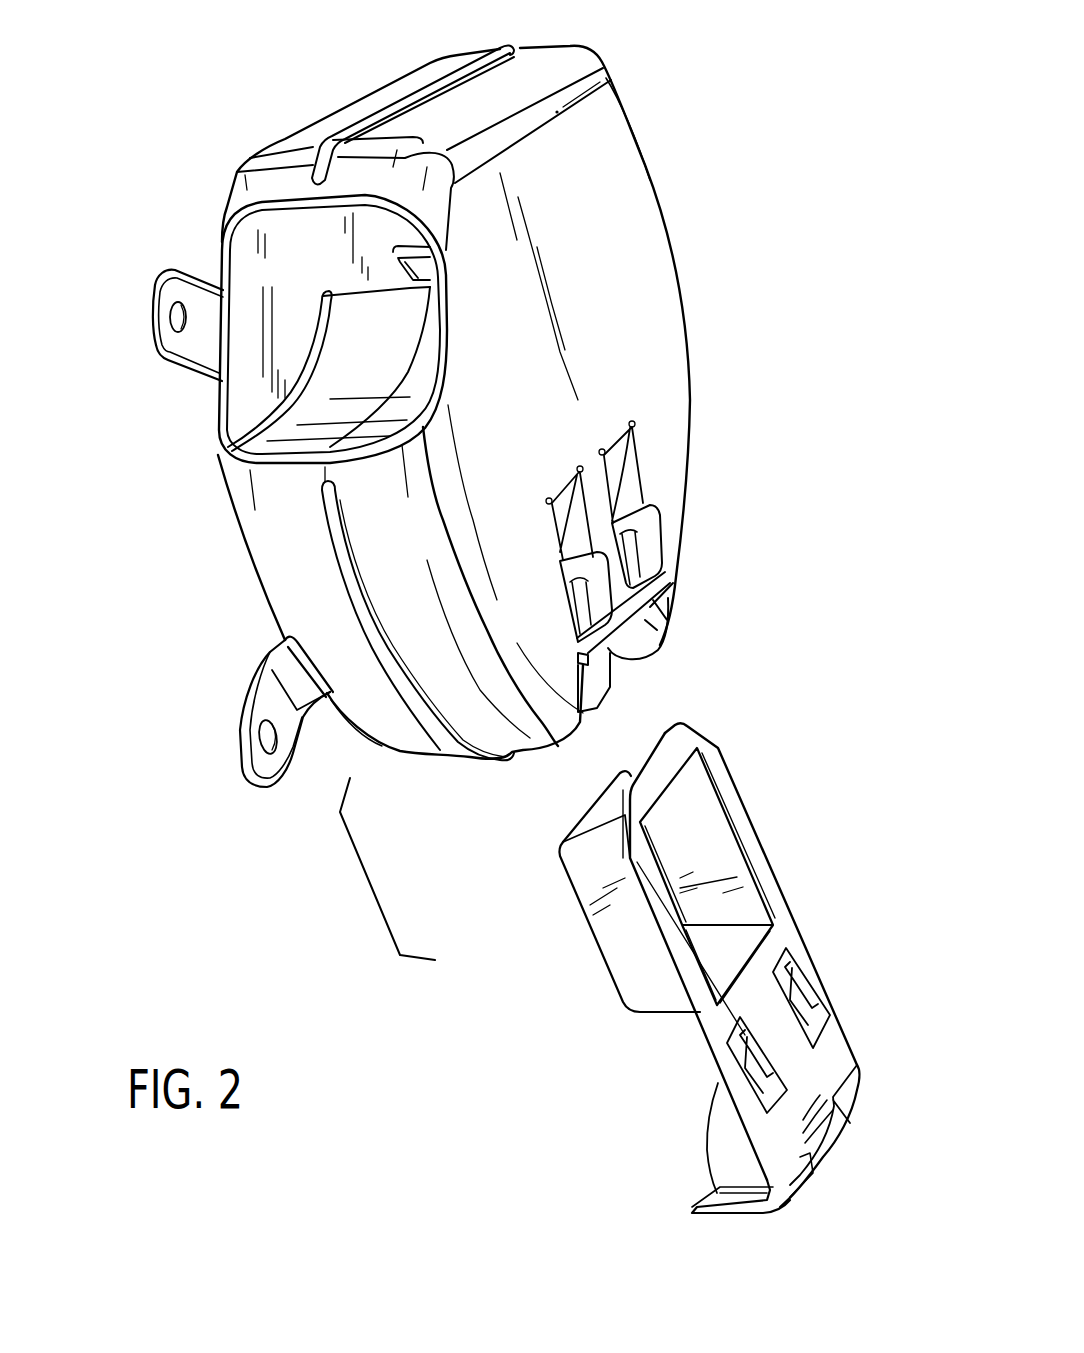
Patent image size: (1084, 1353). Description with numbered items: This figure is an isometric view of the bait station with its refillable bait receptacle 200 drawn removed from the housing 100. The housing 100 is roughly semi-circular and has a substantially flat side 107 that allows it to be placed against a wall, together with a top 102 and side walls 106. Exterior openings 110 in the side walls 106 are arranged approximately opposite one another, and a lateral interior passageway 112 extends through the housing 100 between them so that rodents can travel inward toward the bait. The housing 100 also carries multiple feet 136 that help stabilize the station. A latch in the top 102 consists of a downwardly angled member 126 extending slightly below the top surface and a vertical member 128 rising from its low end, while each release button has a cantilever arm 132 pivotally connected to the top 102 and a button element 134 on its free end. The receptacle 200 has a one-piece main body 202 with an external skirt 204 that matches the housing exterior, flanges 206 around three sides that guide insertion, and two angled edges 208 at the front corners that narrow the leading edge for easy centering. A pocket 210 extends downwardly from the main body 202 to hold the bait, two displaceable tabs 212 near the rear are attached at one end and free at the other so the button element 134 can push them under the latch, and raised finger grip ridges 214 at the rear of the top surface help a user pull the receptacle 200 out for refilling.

The housing 100 is at (715, 333).
The top 102 is at (640, 250).
The side walls 106 is at (300, 590).
The substantially flat side 107 is at (336, 117).
The exterior openings 110 is at (252, 343).
The lateral interior passageway 112 is at (296, 243).
The downwardly angled member 126 is at (658, 622).
The vertical member 128 is at (667, 578).
The cantilever arm 132 is at (632, 473).
The button element 134 is at (657, 528).
The feet 136 is at (157, 312).
The refillable bait receptacle 200 is at (830, 945).
The main body 202 is at (717, 1025).
The external skirt 204 is at (730, 1214).
The flanges 206 is at (657, 748).
The angled edges 208 is at (697, 731).
The pocket 210 is at (712, 845).
The displaceable tabs 212 is at (826, 1018).
The finger grip ridges 214 is at (827, 1150).